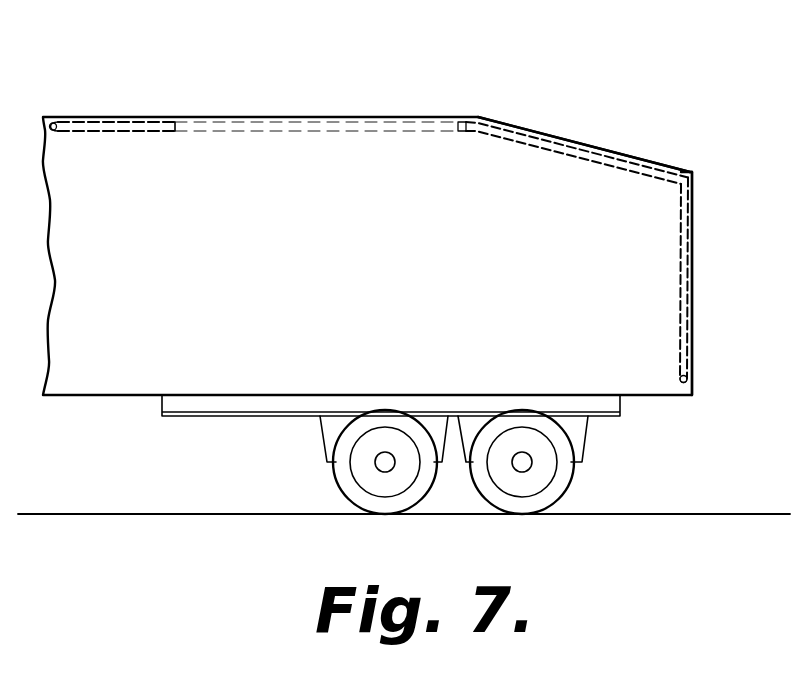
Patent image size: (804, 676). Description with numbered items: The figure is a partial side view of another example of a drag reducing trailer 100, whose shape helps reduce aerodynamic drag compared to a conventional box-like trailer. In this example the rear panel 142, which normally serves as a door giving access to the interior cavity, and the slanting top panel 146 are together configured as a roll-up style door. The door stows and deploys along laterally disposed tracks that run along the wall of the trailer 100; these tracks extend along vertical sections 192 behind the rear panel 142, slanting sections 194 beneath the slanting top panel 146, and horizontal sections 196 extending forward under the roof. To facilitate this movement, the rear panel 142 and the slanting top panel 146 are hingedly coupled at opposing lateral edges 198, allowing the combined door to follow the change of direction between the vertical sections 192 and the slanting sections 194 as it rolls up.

The drag reducing trailer 100 is at (612, 72).
The slanting top panel 146 is at (519, 128).
The rear panel 142 is at (696, 308).
The horizontal sections 196 is at (300, 133).
The slanting sections 194 is at (572, 158).
The vertical sections 192 is at (676, 292).
The opposing lateral edges 198 is at (683, 171).